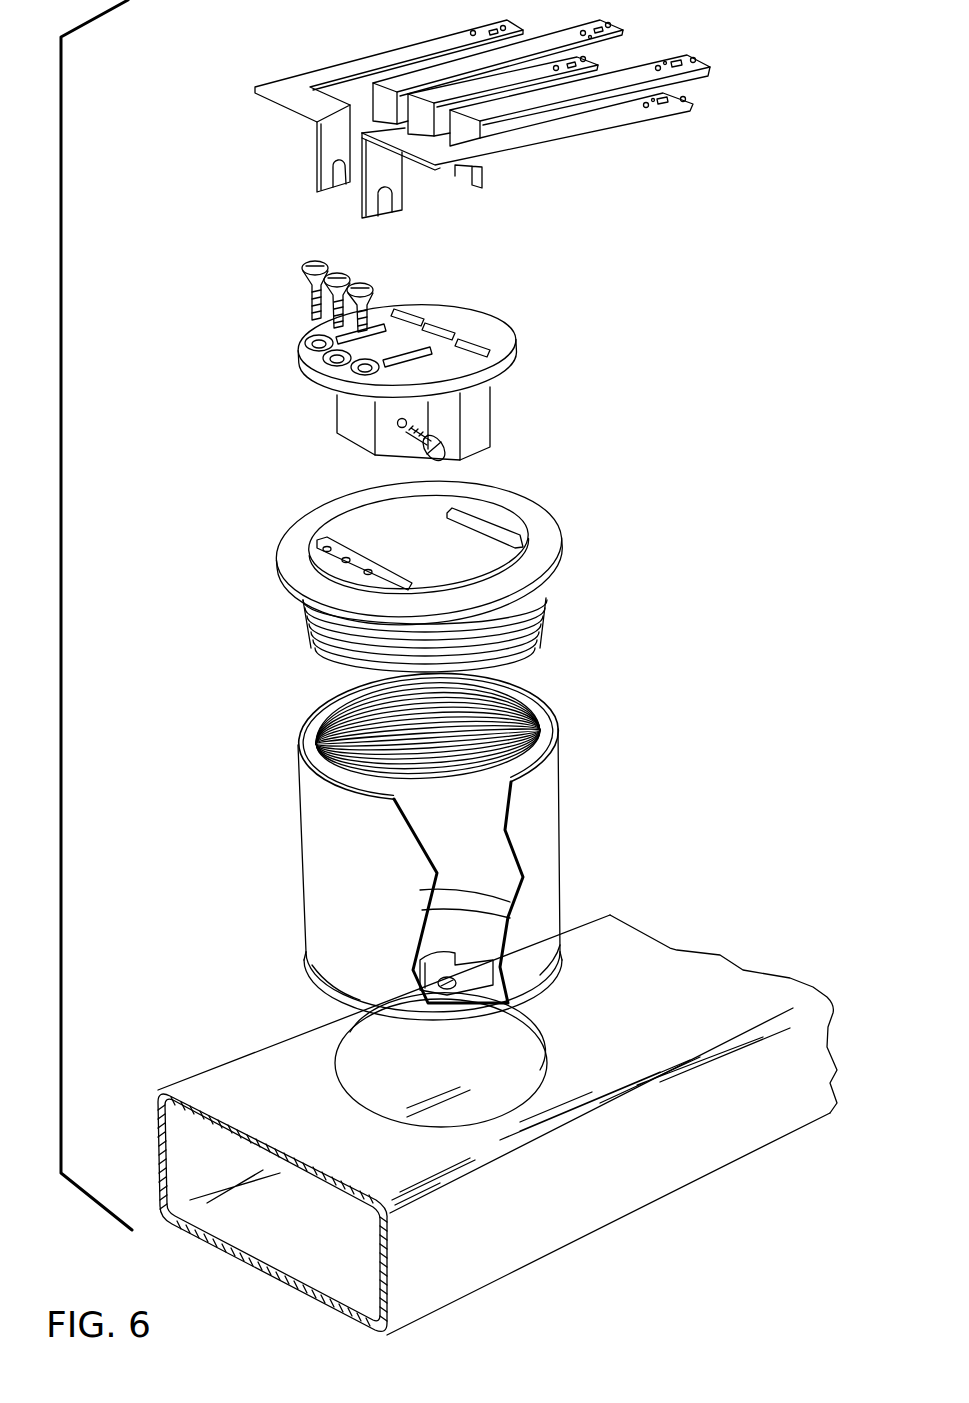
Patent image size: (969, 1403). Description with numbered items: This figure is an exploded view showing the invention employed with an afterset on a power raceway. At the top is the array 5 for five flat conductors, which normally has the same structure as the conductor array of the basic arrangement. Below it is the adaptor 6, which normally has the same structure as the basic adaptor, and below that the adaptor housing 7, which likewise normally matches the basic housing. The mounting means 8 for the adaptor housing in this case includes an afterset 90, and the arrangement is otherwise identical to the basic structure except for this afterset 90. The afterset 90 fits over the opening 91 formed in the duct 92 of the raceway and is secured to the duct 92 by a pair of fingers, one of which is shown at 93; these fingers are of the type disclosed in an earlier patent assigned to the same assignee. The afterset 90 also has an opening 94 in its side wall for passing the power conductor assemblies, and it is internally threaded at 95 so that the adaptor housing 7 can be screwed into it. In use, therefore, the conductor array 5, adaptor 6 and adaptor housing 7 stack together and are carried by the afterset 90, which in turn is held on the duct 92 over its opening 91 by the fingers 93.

The array for five flat conductors 5 is at (278, 57).
The adaptor 6 is at (278, 310).
The adaptor housing 7 is at (258, 552).
The mounting means for the adaptor housing 8 is at (429, 843).
The afterset 90 is at (362, 903).
The opening 91 is at (342, 1093).
The duct 92 is at (676, 1158).
The finger 93 is at (447, 967).
The opening 94 is at (482, 843).
The internal threads 95 is at (498, 723).